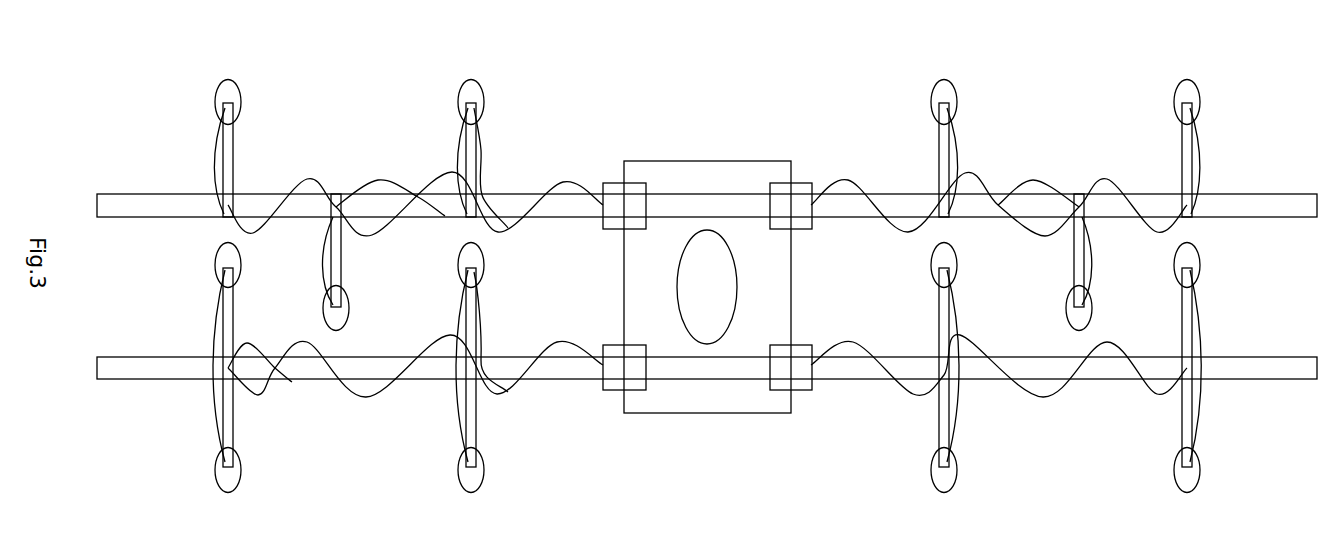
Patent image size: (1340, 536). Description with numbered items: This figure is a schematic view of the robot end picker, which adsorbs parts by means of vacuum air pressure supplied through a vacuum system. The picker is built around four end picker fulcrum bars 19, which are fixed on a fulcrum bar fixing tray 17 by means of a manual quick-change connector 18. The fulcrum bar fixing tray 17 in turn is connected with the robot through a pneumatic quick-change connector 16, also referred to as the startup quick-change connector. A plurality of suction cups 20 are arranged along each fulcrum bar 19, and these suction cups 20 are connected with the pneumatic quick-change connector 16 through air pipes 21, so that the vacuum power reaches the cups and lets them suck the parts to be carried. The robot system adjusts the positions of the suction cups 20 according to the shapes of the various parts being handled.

The pneumatic quick-change connector 16 is at (689, 275).
The fulcrum bar fixing tray 17 is at (744, 187).
The manual quick-change connector 18 is at (798, 207).
The fulcrum bar 19 is at (862, 205).
The suction cup 20 is at (943, 92).
The air pipe 21 is at (975, 170).